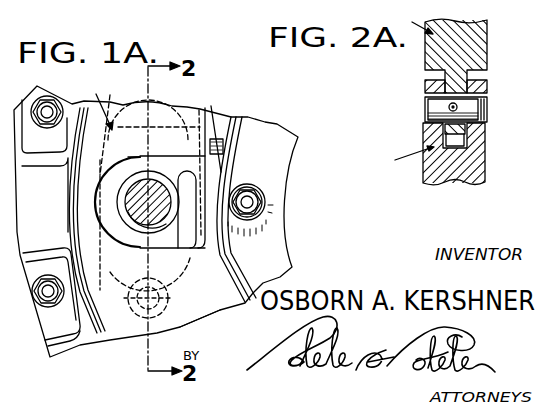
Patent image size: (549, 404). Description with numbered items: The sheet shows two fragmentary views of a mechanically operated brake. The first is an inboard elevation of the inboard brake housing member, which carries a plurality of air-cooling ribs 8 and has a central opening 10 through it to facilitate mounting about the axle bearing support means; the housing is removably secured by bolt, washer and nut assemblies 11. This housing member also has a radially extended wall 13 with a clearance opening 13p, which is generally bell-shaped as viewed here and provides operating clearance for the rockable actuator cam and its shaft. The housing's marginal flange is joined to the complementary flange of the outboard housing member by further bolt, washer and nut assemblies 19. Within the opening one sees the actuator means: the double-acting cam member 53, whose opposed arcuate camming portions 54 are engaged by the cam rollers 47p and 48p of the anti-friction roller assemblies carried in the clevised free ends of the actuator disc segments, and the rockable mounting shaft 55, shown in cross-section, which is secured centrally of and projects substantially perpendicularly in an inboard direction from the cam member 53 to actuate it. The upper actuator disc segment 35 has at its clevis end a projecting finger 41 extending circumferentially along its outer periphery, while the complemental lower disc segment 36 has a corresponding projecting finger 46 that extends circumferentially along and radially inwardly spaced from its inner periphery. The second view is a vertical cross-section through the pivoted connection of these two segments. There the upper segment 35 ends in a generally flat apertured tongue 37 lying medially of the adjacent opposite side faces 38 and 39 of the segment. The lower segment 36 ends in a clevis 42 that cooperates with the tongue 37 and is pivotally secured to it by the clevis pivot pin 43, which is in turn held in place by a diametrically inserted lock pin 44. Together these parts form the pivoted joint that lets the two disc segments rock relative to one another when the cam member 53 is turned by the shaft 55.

In FIG. 1A, the air-cooling ribs 8 is at (33, 252).
In FIG. 1A, the central opening 10 is at (286, 160).
In FIG. 1A, the bolt, washer and nut assemblies 11 is at (258, 201).
In FIG. 1A, the radially extended wall 13 is at (203, 118).
In FIG. 1A, the clearance opening 13p is at (183, 115).
In FIG. 1A, the bolt, washer and nut assemblies 19 is at (40, 109).
In FIG. 1A, the actuator disc segment 35 is at (95, 104).
In FIG. 2A, the actuator disc segment 35 is at (412, 21).
In FIG. 1A, the disc segment 36 is at (206, 318).
In FIG. 2A, the disc segment 36 is at (470, 162).
In FIG. 2A, the apertured tongue 37 is at (443, 133).
In FIG. 2A, the side face 38 is at (425, 62).
In FIG. 2A, the side face 39 is at (490, 62).
In FIG. 1A, the projecting finger 41 is at (117, 217).
In FIG. 2A, the clevis 42 is at (403, 157).
In FIG. 2A, the clevis pivot pin 43 is at (432, 108).
In FIG. 2A, the lock pin 44 is at (450, 105).
In FIG. 1A, the projecting finger 46 is at (185, 183).
In FIG. 1A, the roller 47p is at (150, 184).
In FIG. 1A, the roller 48p is at (82, 287).
In FIG. 1A, the cam member 53 is at (100, 243).
In FIG. 1A, the arcuate camming portions 54 is at (125, 153).
In FIG. 1A, the rockable mounting shaft 55 is at (162, 218).